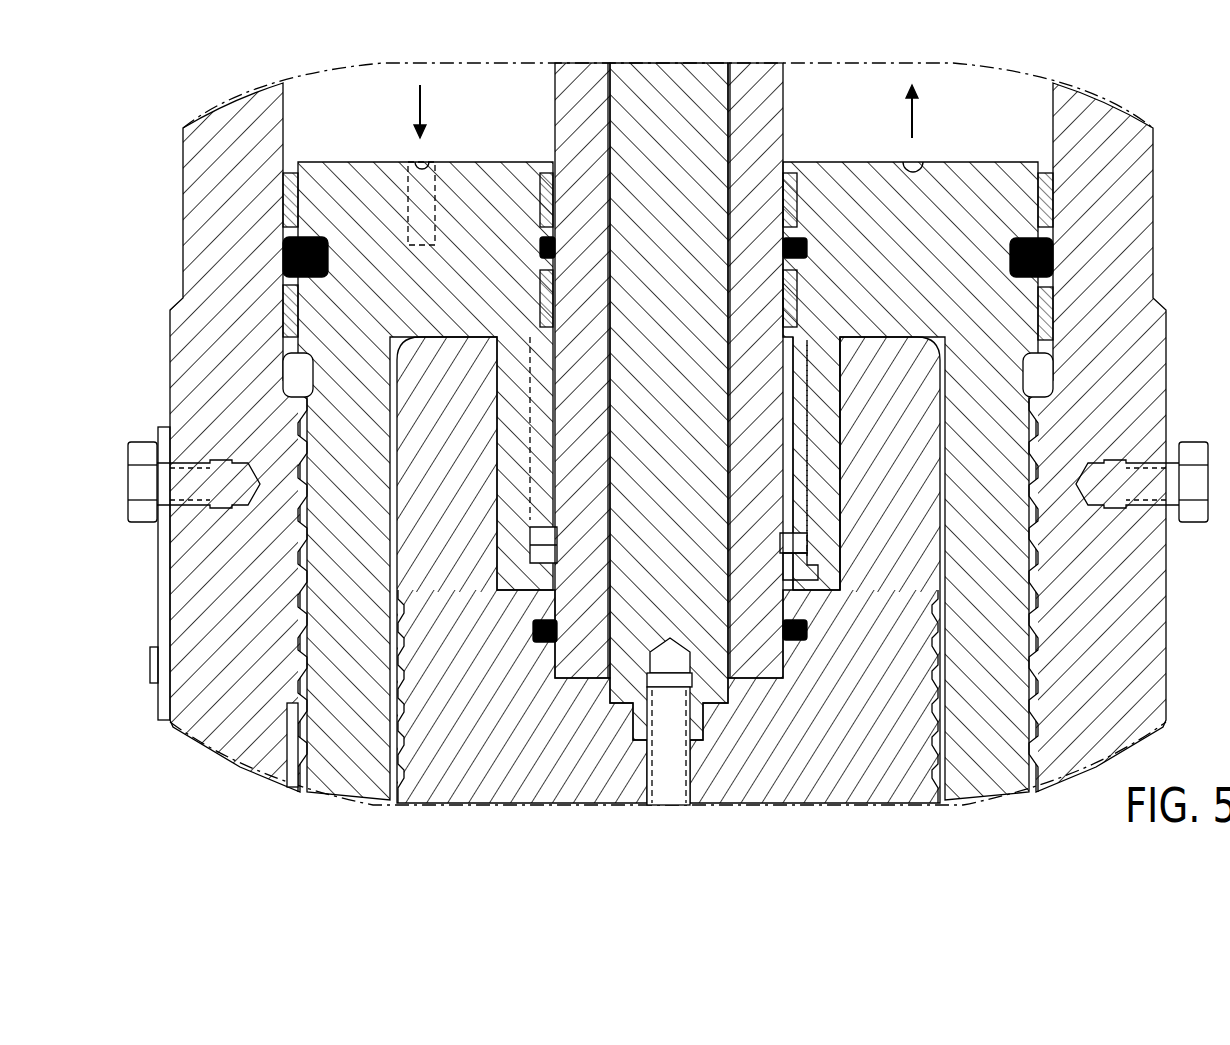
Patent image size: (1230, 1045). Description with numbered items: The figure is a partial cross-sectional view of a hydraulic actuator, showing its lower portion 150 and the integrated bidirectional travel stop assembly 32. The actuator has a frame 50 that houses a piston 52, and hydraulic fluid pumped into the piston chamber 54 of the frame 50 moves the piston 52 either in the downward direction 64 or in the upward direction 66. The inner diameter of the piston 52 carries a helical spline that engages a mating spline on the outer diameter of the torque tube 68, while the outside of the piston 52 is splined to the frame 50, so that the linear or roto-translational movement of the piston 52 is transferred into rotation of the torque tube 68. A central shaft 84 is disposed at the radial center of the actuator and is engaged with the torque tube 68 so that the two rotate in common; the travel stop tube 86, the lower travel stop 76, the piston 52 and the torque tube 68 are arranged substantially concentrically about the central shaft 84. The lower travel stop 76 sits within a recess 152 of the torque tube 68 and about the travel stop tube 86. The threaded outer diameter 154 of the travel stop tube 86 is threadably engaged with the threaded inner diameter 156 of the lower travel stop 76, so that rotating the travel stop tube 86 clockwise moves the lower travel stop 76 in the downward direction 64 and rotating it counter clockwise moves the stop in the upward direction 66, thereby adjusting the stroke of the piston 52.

The integrated bidirectional travel stop assembly 32 is at (400, 85).
The frame 50 is at (1133, 278).
The piston 52 is at (988, 168).
The piston chamber 54 is at (984, 105).
The downward direction 64 is at (420, 98).
The upward direction 66 is at (912, 118).
The torque tube 68 is at (898, 525).
The lower travel stop 76 is at (815, 585).
The central shaft 84 is at (708, 160).
The travel stop tube 86 is at (765, 110).
The lower portion 150 is at (345, 88).
The recess 152 is at (843, 430).
The outer diameter 154 is at (805, 385).
The inner diameter 156 is at (795, 440).